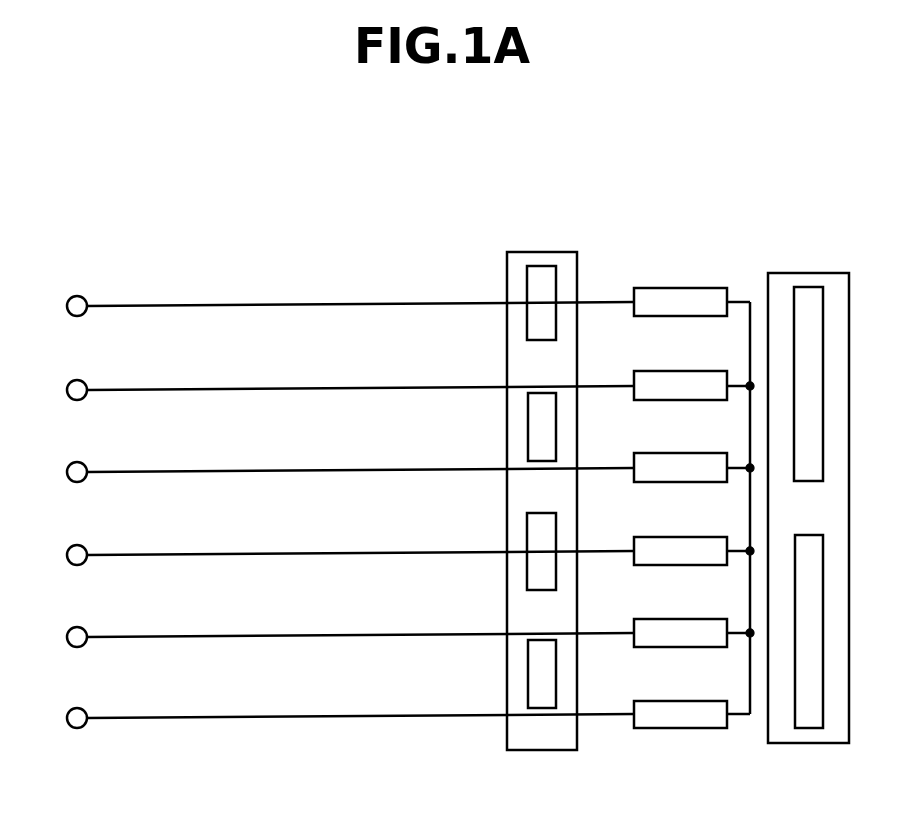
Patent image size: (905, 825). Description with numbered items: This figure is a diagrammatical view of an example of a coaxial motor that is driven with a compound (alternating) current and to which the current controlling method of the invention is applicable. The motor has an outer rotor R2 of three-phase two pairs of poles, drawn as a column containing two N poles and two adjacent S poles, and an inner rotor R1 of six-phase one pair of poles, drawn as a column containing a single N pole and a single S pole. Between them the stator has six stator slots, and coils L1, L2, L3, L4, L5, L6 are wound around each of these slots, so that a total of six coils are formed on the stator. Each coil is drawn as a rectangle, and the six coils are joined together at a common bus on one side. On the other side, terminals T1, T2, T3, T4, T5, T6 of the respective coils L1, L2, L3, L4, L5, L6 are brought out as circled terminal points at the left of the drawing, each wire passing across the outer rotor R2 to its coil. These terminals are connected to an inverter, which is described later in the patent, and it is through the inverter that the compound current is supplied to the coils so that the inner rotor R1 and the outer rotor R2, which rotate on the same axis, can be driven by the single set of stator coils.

The terminal T1 is at (334, 306).
The terminal T2 is at (334, 390).
The terminal T3 is at (334, 472).
The terminal T4 is at (334, 555).
The terminal T5 is at (334, 637).
The terminal T6 is at (334, 718).
The coil L1 is at (692, 286).
The coil L2 is at (694, 370).
The coil L3 is at (694, 452).
The coil L4 is at (694, 535).
The coil L5 is at (694, 617).
The coil L6 is at (692, 699).
The inner rotor R1 is at (808, 272).
The outer rotor R2 is at (538, 252).